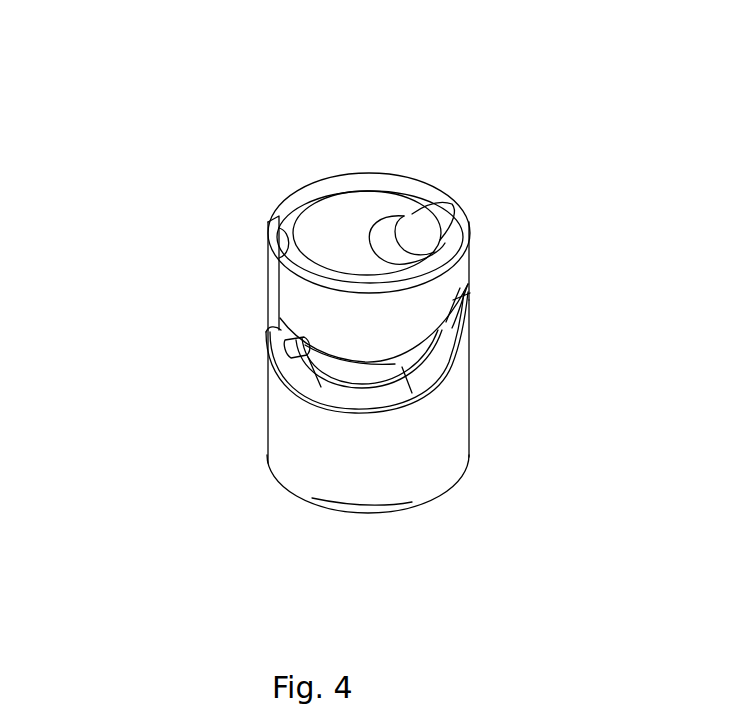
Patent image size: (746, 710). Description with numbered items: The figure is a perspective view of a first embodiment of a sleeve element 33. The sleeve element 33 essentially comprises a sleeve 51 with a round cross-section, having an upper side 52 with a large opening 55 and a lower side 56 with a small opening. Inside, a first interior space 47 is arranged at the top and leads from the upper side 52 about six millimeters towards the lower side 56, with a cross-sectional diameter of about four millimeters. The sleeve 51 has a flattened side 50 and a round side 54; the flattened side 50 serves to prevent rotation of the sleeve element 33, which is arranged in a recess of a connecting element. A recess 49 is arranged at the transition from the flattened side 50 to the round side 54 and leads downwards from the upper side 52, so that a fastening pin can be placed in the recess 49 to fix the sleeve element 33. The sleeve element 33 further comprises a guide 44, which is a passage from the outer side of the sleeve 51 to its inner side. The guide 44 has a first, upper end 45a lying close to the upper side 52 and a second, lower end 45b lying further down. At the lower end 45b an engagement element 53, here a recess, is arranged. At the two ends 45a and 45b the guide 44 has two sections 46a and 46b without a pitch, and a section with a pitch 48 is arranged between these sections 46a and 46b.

The sleeve element 33 is at (200, 148).
The guide 44 is at (452, 363).
The first, upper end 45a is at (402, 220).
The second, lower end 45b is at (290, 365).
The section without a pitch 46a is at (330, 395).
The section without a pitch 46b is at (425, 255).
The first interior space 47 is at (383, 397).
The section with a pitch 48 is at (440, 335).
The recess 49 is at (275, 342).
The flattened side 50 is at (310, 192).
The sleeve 51 is at (300, 425).
The upper side 52 is at (287, 213).
The engagement element 53 is at (281, 318).
The round side 54 is at (445, 410).
The large opening 55 is at (367, 190).
The lower side 56 is at (395, 513).